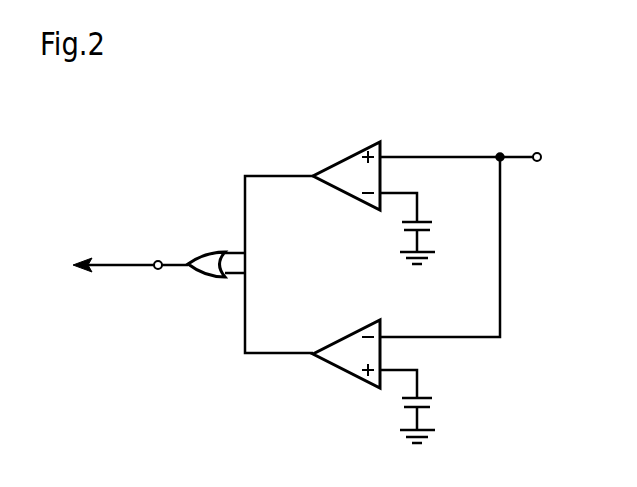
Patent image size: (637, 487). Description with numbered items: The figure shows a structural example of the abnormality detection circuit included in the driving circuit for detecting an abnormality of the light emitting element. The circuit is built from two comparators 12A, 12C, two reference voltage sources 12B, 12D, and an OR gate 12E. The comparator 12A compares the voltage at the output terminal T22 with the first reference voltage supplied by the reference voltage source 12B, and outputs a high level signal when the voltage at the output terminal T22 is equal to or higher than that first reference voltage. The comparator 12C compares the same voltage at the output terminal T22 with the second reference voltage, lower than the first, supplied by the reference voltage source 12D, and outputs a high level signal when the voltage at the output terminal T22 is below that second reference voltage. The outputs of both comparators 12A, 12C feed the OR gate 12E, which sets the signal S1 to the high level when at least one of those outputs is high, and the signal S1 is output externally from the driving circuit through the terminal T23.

The comparator 12A is at (345, 152).
The reference voltage source 12B is at (435, 226).
The comparator 12C is at (345, 330).
The reference voltage source 12D is at (435, 403).
The OR gate 12E is at (212, 250).
The output terminal T22 is at (536, 153).
The terminal T23 is at (158, 261).
The signal S1 is at (113, 256).